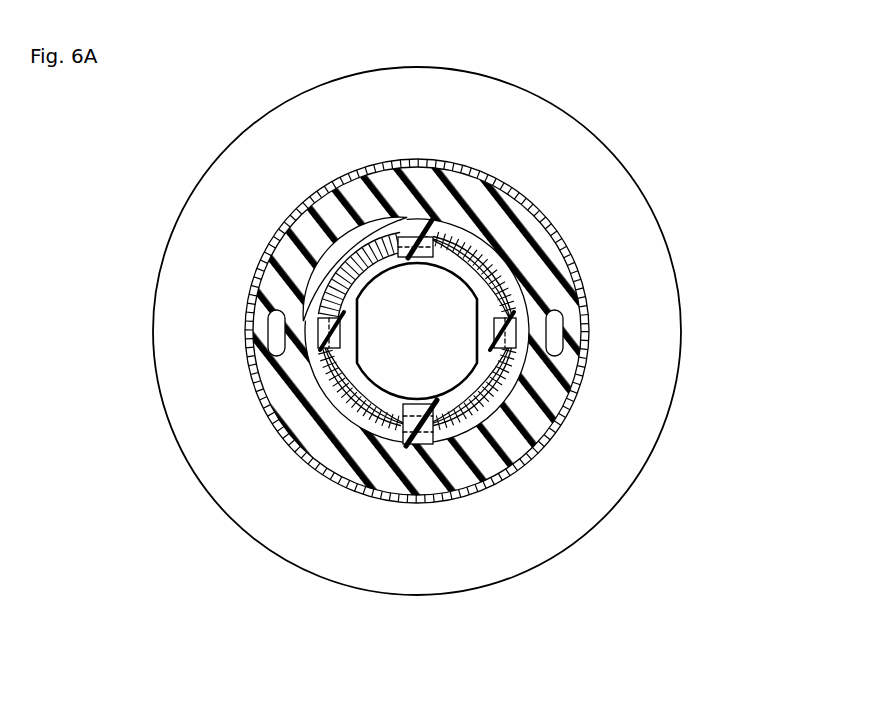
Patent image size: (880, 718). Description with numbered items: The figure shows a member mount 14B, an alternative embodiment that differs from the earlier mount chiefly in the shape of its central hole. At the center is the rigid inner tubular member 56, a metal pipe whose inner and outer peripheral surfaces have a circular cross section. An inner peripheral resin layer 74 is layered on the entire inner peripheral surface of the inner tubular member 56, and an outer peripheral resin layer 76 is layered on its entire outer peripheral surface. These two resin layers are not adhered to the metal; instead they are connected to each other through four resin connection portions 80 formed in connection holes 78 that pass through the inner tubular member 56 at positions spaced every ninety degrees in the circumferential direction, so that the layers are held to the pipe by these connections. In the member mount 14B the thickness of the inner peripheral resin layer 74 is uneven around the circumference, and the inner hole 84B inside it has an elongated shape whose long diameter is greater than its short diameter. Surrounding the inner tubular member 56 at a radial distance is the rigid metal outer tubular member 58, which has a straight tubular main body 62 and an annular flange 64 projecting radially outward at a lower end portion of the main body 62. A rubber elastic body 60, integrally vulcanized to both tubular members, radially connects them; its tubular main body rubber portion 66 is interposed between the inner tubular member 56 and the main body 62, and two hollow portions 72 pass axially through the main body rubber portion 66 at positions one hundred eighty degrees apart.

The member mount 14B is at (620, 100).
The inner tubular member 56 is at (488, 245).
The outer tubular member 58 is at (580, 408).
The rubber elastic body 60 is at (531, 463).
The main body 62 is at (343, 180).
The flange 64 is at (652, 380).
The main body rubber portion 66 is at (417, 182).
The hollow portions 72 is at (276, 333).
The inner peripheral resin layer 74 is at (360, 280).
The outer peripheral resin layer 76 is at (510, 386).
The connection holes 78 is at (413, 243).
The resin connection portions 80 is at (410, 240).
The inner hole 84B is at (350, 426).